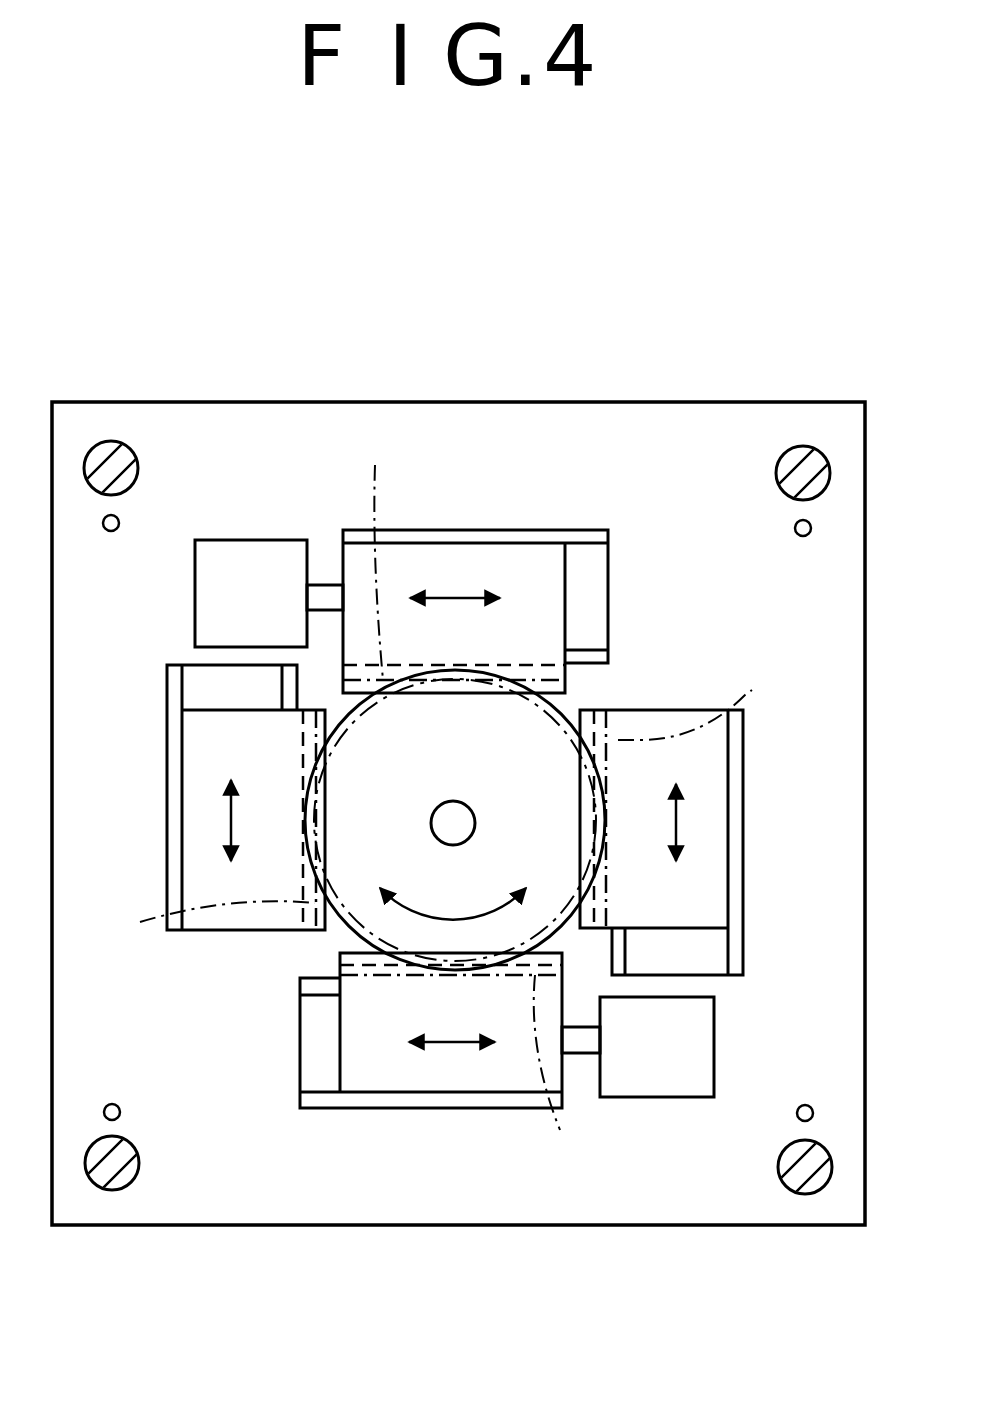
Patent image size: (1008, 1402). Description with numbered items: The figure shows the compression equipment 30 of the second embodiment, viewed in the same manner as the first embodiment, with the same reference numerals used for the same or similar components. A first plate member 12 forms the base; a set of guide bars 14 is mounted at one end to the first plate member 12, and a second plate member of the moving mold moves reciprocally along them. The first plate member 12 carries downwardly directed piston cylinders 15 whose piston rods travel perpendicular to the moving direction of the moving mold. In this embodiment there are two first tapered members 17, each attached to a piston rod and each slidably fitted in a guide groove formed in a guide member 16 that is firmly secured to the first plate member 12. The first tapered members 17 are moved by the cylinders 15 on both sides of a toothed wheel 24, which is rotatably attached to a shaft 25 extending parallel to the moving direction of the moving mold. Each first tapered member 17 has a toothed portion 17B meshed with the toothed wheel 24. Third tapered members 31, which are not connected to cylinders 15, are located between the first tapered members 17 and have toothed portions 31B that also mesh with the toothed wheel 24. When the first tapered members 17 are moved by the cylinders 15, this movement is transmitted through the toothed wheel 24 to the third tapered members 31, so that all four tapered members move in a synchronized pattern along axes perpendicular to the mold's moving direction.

The first plate member 12 is at (222, 1222).
The guide bars 14 is at (107, 462).
The piston cylinders 15 is at (215, 598).
The guide member 16 is at (548, 530).
The first tapered member 17 is at (478, 560).
The toothed portion 17B is at (481, 806).
The toothed wheel 24 is at (535, 785).
The shaft 25 is at (460, 823).
The compression equipment 30 is at (487, 343).
The third tapered members 31 is at (195, 815).
The toothed portions 31B is at (466, 806).